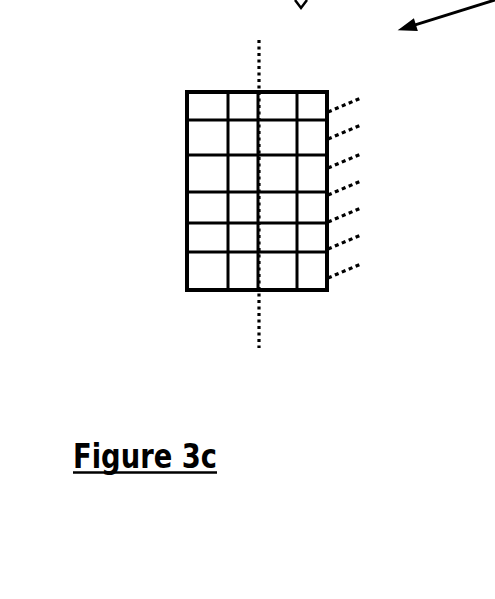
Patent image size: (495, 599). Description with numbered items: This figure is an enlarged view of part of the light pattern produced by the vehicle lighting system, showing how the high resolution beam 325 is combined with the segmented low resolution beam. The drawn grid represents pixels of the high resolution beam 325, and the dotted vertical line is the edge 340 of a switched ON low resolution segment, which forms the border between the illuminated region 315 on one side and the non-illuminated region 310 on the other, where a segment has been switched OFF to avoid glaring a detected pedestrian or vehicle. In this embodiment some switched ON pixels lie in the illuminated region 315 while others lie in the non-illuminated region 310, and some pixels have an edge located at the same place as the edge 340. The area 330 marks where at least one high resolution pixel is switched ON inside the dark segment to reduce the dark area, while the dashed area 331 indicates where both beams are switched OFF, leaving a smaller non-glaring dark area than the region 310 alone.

The non-illuminated region 310 is at (300, 321).
The illuminated region 315 is at (215, 313).
The high resolution beam 325 is at (190, 136).
The area of switched ON high resolution pixel 330 is at (286, 80).
The non-illuminated area 331 is at (369, 267).
The edge of switched ON segment 340 is at (261, 361).